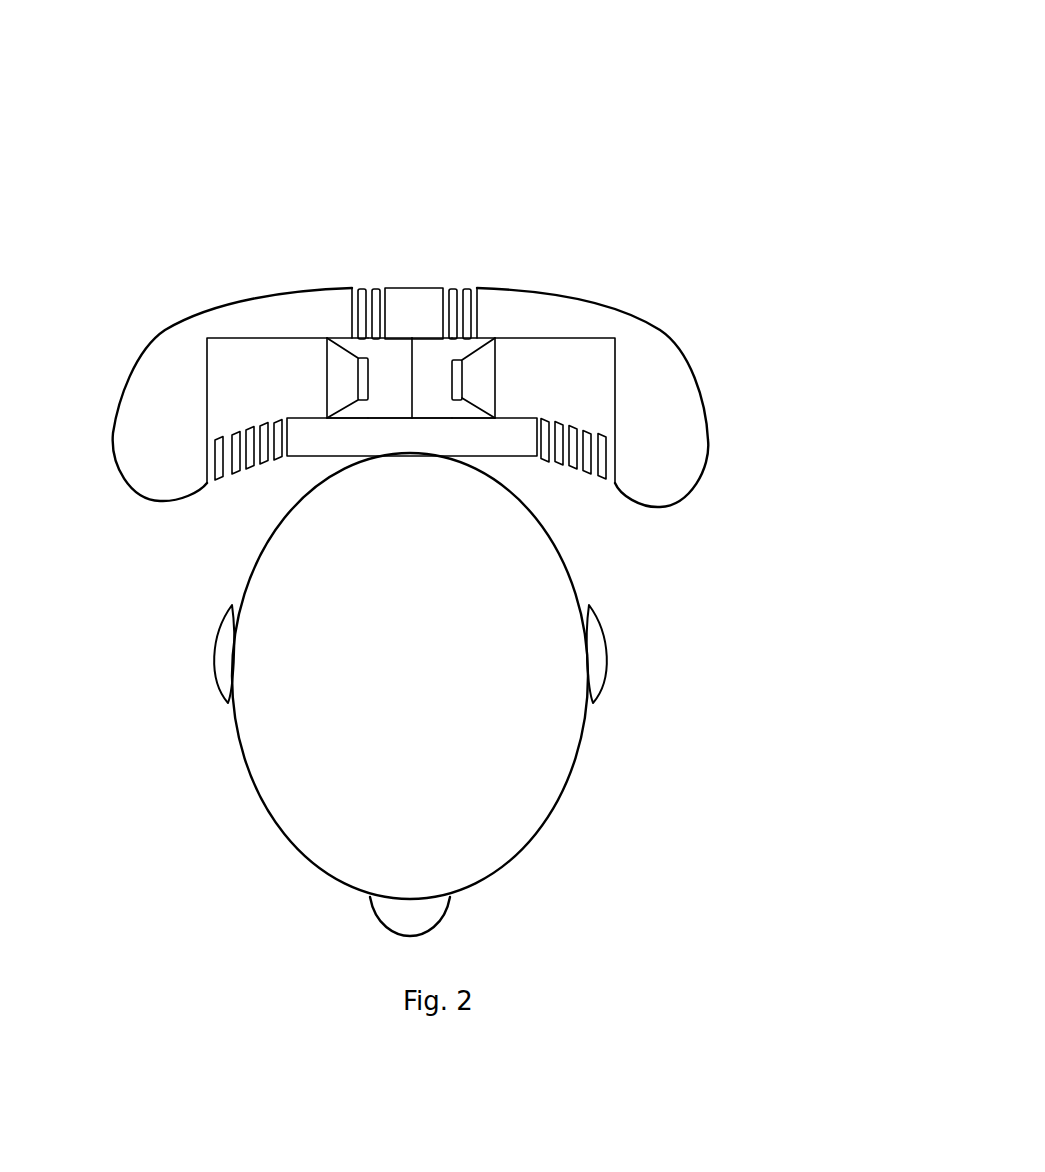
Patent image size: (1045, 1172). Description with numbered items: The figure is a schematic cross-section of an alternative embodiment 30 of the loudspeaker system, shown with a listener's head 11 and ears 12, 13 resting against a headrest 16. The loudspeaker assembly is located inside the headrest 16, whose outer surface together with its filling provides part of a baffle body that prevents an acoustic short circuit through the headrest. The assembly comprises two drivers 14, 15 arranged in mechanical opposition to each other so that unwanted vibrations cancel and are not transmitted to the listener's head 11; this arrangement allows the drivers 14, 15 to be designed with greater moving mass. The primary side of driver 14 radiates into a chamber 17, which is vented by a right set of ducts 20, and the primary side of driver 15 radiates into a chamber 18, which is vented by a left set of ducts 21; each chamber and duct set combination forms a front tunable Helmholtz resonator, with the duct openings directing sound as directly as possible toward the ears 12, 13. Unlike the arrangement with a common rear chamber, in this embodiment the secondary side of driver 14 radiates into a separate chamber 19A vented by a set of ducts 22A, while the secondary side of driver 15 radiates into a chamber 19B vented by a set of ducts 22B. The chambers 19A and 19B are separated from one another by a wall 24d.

The loudspeaker system embodiment 30 is at (613, 133).
The listener's head 11 is at (445, 727).
The listener's ear 12 is at (218, 630).
The listener's ear 13 is at (603, 623).
The driver 14 is at (327, 380).
The driver 15 is at (572, 377).
The headrest 16 is at (705, 417).
The chamber 17 is at (252, 382).
The chamber 18 is at (497, 382).
The chamber 19A is at (400, 363).
The chamber 19B is at (427, 362).
The set of ducts 20 is at (243, 470).
The set of ducts 21 is at (560, 473).
The set of ducts 22A is at (365, 287).
The set of ducts 22B is at (463, 287).
The wall 24d is at (418, 380).